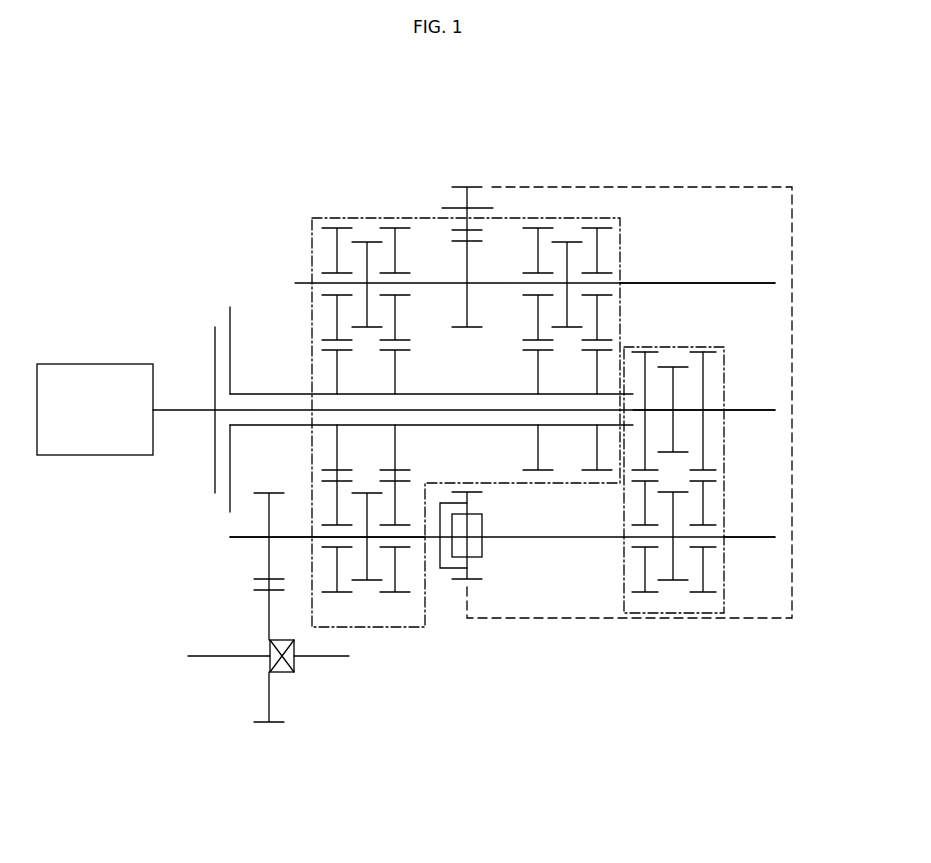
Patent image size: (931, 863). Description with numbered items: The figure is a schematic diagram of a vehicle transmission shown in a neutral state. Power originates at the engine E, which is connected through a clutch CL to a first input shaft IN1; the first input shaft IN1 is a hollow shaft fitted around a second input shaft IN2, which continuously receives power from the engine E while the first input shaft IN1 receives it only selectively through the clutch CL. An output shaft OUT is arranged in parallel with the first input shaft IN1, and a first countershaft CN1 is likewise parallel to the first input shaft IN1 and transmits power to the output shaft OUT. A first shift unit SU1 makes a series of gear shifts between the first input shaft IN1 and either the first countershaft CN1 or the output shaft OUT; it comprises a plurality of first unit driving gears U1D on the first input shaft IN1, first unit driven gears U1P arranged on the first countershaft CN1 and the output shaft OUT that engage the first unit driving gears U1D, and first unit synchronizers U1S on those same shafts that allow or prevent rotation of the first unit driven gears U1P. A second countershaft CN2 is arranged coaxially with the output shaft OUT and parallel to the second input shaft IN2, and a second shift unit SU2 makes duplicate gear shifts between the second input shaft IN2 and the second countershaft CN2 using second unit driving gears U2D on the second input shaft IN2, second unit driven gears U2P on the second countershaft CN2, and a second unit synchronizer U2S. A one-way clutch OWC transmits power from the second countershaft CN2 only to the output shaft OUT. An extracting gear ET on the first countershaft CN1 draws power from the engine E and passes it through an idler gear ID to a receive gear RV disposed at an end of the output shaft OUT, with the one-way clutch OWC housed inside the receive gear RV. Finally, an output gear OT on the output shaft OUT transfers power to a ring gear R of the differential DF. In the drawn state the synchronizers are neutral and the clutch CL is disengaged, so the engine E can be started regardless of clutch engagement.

The engine E is at (95, 364).
The clutch CL is at (222, 318).
The first input shaft IN1 is at (263, 394).
The second input shaft IN2 is at (750, 408).
The output gear OT is at (272, 493).
The output shaft OUT is at (230, 537).
The differential DF is at (268, 646).
The ring gear R is at (272, 733).
The first shift unit SU1 is at (325, 218).
The second shift unit SU2 is at (724, 582).
The first unit driving gear U1D is at (333, 347).
The first unit driven gear U1P is at (400, 228).
The first unit synchronizer U1S is at (367, 240).
The second unit driving gear U2D is at (645, 350).
The second unit driven gear U2P is at (648, 612).
The second unit synchronizer U2S is at (673, 420).
The idler gear ID is at (470, 185).
The extracting gear ET is at (475, 228).
The first countershaft CN1 is at (702, 283).
The second countershaft CN2 is at (752, 535).
The one-way clutch OWC is at (483, 548).
The receive gear RV is at (467, 590).